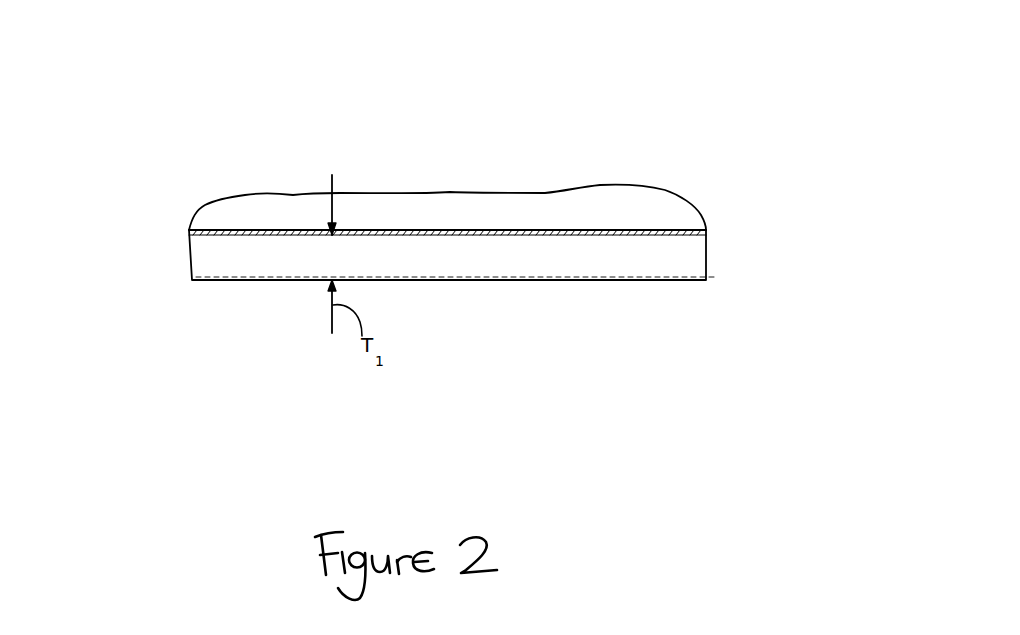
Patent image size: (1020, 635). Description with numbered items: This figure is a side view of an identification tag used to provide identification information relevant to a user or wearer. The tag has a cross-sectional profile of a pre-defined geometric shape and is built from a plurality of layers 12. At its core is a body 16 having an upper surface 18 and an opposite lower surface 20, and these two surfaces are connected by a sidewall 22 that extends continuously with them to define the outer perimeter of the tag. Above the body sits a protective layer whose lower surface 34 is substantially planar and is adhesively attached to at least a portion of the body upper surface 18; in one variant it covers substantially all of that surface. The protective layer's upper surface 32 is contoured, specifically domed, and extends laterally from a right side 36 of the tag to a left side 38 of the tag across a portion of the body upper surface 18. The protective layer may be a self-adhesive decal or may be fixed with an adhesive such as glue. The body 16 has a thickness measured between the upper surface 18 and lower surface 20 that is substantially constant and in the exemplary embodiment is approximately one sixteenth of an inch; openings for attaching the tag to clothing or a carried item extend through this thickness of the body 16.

The layers 12 is at (456, 244).
The body 16 is at (190, 258).
The upper surface 18 is at (189, 230).
The lower surface 20 is at (216, 283).
The sidewall 22 is at (500, 256).
The upper surface 32 is at (288, 196).
The lower surface 34 is at (383, 230).
The right side 36 is at (720, 172).
The left side 38 is at (145, 143).